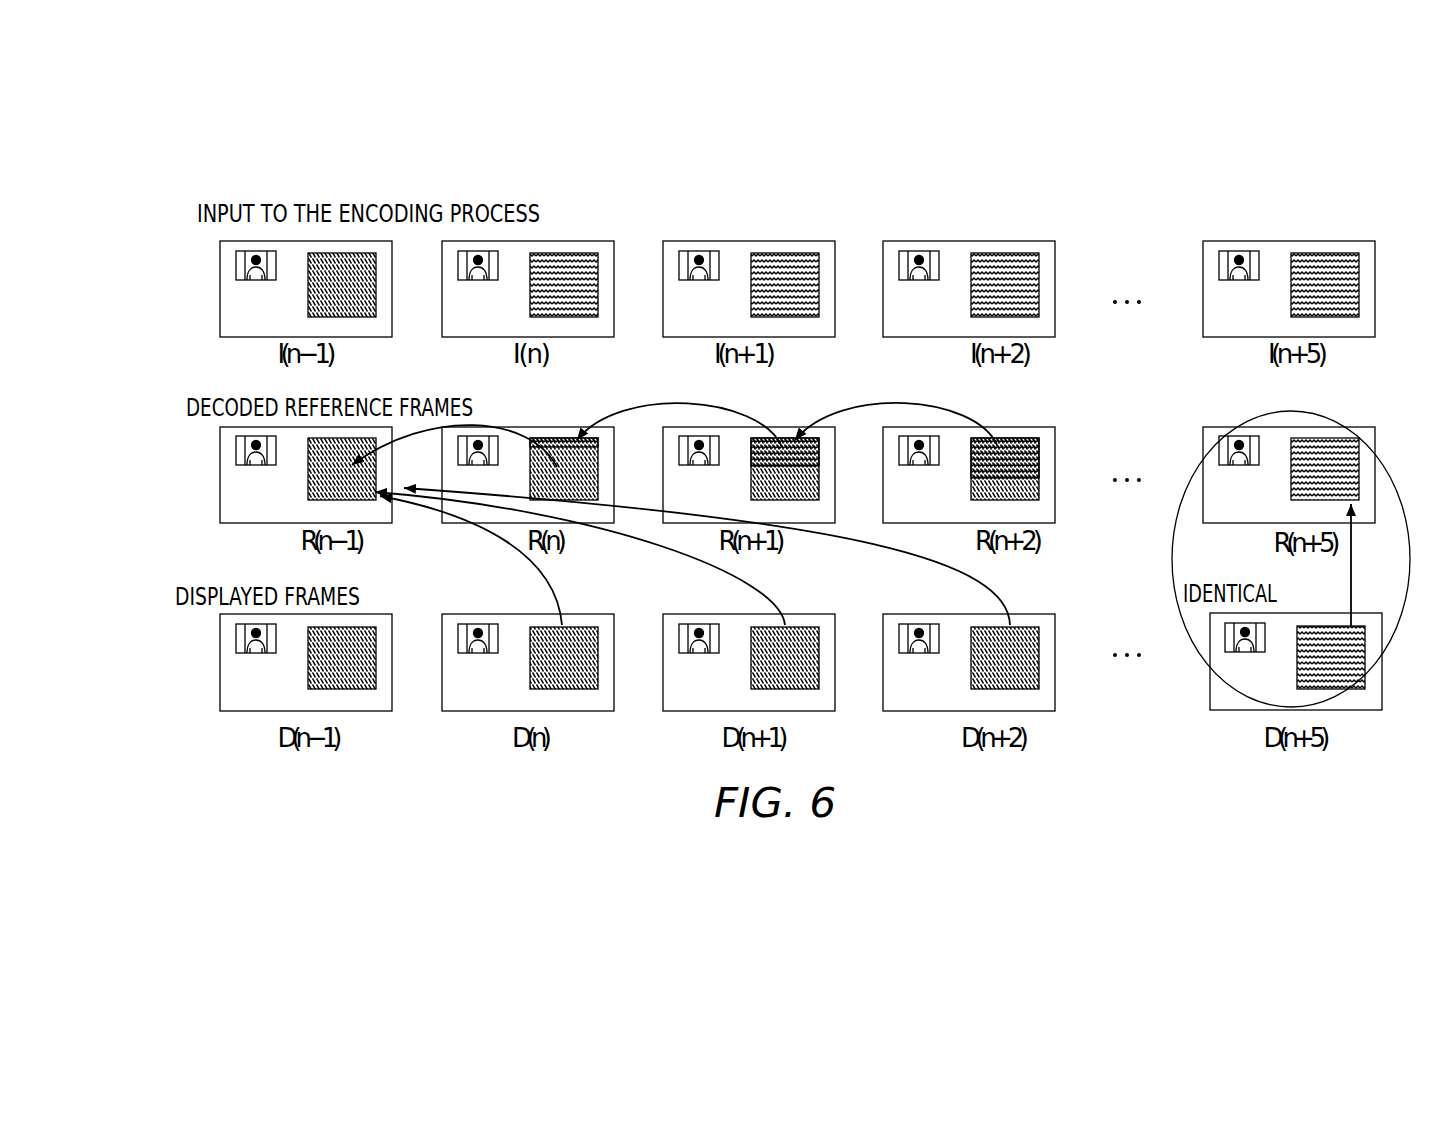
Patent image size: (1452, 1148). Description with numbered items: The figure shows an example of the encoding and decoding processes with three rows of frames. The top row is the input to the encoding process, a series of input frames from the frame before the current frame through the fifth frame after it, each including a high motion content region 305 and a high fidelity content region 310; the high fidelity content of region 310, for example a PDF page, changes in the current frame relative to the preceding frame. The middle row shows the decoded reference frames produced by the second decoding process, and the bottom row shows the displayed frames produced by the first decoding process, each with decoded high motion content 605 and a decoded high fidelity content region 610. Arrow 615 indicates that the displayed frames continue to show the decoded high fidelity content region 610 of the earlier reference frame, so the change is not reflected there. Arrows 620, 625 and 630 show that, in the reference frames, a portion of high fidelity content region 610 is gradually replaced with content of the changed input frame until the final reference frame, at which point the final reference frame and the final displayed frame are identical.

The high motion content region 305 is at (236, 259).
The high fidelity content region 310 is at (308, 300).
The decoded high motion content 605 is at (236, 449).
The decoded high fidelity content region 610 is at (308, 484).
The arrow 615 is at (560, 590).
The arrow 620 is at (522, 440).
The arrow 625 is at (755, 422).
The arrow 630 is at (970, 425).